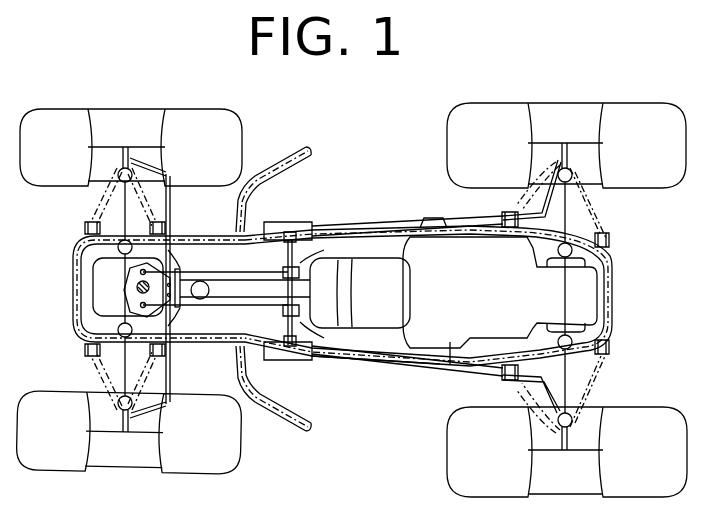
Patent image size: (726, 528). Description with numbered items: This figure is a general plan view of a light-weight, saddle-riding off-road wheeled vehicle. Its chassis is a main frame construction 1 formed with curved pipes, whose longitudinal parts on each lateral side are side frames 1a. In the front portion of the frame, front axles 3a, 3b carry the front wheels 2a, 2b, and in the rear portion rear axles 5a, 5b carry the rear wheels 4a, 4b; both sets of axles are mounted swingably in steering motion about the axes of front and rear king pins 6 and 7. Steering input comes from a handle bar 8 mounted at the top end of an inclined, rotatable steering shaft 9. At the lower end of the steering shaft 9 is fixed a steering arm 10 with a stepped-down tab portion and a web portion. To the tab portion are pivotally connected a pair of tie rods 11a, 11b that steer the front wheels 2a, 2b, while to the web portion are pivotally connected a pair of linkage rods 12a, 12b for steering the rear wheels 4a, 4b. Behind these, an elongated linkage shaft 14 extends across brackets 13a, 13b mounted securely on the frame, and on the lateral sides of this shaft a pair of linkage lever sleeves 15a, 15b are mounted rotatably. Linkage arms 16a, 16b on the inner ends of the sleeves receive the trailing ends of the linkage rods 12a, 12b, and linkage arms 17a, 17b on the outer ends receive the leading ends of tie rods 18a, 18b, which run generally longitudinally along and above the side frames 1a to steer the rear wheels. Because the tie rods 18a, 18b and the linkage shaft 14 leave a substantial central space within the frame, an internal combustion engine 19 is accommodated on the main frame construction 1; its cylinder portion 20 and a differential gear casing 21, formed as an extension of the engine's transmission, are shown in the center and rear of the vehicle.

The main frame construction 1 is at (352, 227).
The side frame 1a is at (365, 362).
The front wheel 2a is at (50, 465).
The front wheel 2b is at (60, 116).
The front axle 3a is at (118, 432).
The front axle 3b is at (132, 158).
The rear wheel 4a is at (642, 487).
The rear wheel 4b is at (652, 111).
The rear axle 5a is at (572, 452).
The rear axle 5b is at (571, 153).
The front king pin 6 is at (119, 165).
The rear king pin 7 is at (573, 180).
The handle bar 8 is at (286, 160).
The steering shaft 9 is at (134, 288).
The steering arm 10 is at (140, 306).
The tie rod 11a is at (168, 384).
The tie rod 11b is at (168, 198).
The linkage rod 12a is at (195, 318).
The linkage rod 12b is at (185, 250).
The bracket 13a is at (270, 359).
The bracket 13b is at (308, 227).
The linkage shaft 14 is at (247, 282).
The linkage lever sleeve 15a is at (306, 348).
The linkage lever sleeve 15b is at (287, 232).
The linkage arm 16a is at (302, 320).
The linkage arm 16b is at (297, 268).
The linkage arm 17a is at (283, 340).
The linkage arm 17b is at (284, 243).
The tie rod 18a is at (412, 363).
The tie rod 18b is at (387, 225).
The internal combustion engine 19 is at (450, 365).
The cylinder portion 20 is at (405, 297).
The differential gear casing 21 is at (590, 296).